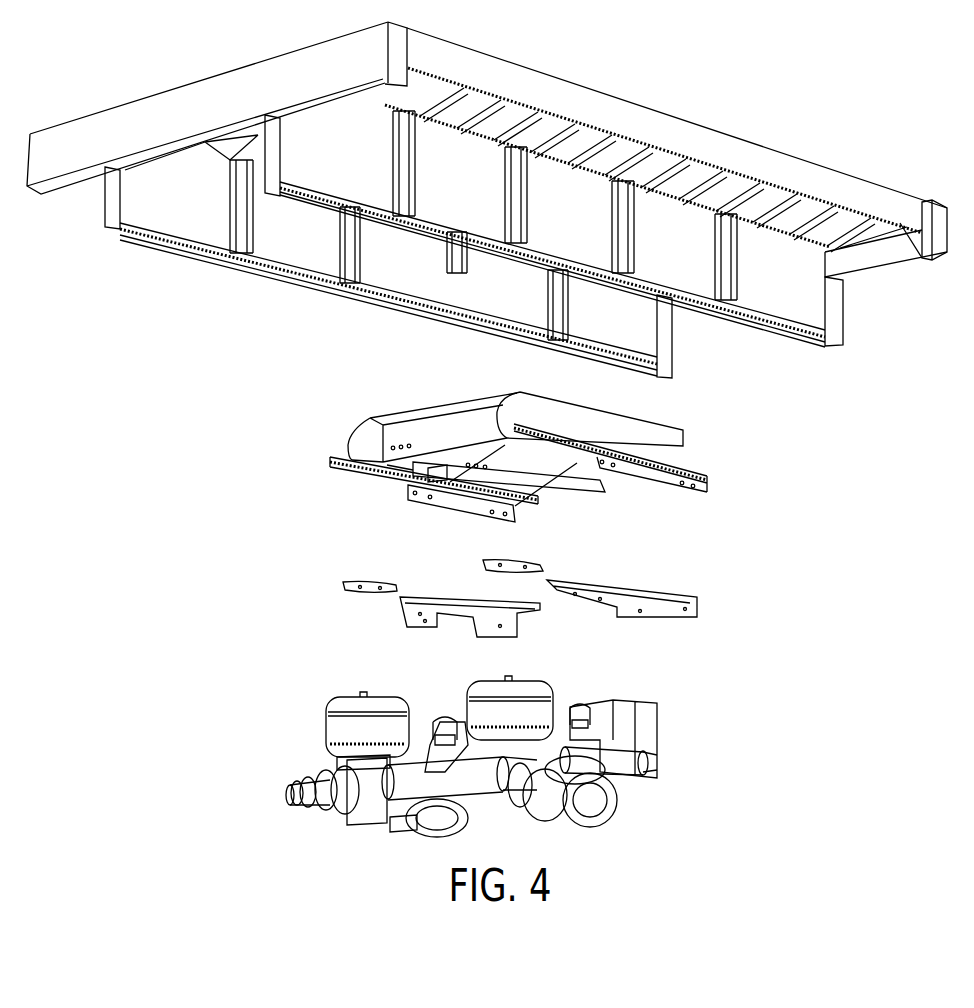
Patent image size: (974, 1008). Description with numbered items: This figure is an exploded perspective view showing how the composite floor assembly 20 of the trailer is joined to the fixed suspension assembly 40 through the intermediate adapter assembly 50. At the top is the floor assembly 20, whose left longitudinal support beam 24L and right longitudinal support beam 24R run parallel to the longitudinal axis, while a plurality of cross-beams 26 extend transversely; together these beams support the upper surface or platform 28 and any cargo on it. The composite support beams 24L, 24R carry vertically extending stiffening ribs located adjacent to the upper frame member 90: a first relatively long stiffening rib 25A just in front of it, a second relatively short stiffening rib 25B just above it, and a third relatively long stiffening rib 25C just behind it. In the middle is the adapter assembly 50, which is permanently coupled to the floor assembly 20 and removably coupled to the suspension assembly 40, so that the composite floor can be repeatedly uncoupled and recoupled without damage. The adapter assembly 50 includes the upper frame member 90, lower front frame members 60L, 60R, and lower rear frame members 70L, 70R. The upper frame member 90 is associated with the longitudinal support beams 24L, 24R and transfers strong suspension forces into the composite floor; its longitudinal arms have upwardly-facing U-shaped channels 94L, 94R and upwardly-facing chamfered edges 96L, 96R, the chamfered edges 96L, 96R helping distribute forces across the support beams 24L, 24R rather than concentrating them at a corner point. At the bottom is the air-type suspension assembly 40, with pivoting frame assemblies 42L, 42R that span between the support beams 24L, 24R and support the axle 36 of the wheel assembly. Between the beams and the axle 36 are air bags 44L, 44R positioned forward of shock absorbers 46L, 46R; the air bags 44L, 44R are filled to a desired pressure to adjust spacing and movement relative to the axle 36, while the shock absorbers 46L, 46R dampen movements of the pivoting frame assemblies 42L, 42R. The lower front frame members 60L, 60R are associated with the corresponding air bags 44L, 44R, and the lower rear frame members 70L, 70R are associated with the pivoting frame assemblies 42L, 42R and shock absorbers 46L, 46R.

The floor assembly 20 is at (487, 209).
The platform 28 is at (687, 123).
The cross-beams 26 is at (537, 147).
The right longitudinal support beam 24R is at (162, 235).
The left longitudinal support beam 24L is at (343, 200).
The first relatively long stiffening rib 25A is at (348, 277).
The second relatively short stiffening rib 25B is at (463, 275).
The third relatively long stiffening rib 25C is at (570, 348).
The intermediate adapter assembly 50 is at (544, 487).
The upper frame member 90 is at (507, 430).
The right upwardly-facing U-shaped channel 94R is at (321, 455).
The left upwardly-facing U-shaped channel 94L is at (697, 456).
The right upwardly-facing chamfered edge 96R is at (352, 425).
The left upwardly-facing chamfered edge 96L is at (505, 390).
The right lower front frame member 60R is at (359, 562).
The left lower front frame member 60L is at (545, 556).
The right lower rear frame member 70R is at (447, 580).
The left lower rear frame member 70L is at (672, 583).
The suspension assembly 40 is at (448, 748).
The axle 36 is at (473, 783).
The right pivoting frame assembly 42R is at (463, 727).
The left pivoting frame assembly 42L is at (637, 720).
The right air bag 44R is at (343, 737).
The left air bag 44L is at (540, 688).
The right shock absorber 46R is at (433, 727).
The left shock absorber 46L is at (573, 710).